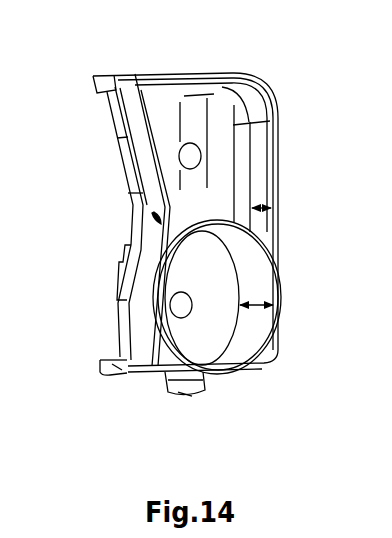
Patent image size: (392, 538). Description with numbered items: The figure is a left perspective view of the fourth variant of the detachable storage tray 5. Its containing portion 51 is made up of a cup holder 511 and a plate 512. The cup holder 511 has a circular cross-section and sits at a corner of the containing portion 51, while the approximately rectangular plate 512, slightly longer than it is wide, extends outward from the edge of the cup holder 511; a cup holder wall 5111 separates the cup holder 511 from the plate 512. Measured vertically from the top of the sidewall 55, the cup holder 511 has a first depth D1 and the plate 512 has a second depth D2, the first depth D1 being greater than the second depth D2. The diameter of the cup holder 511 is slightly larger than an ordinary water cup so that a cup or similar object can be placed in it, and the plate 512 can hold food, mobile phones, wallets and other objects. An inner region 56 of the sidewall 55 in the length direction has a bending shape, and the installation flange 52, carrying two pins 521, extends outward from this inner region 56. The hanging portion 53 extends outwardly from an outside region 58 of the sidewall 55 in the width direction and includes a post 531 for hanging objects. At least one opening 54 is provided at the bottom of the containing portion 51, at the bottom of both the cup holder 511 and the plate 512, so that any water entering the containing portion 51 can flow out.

The detachable storage tray 5 is at (281, 87).
The containing portion 51 is at (262, 160).
The cup holder 511 is at (222, 325).
The cup holder wall 5111 is at (250, 243).
The plate 512 is at (190, 100).
The installation flange 52 is at (152, 192).
The pins 521 is at (135, 268).
The hanging portion 53 is at (160, 380).
The post 531 is at (188, 398).
The opening 54 is at (188, 158).
The sidewall 55 is at (243, 74).
The inner region 56 is at (107, 360).
The outside region 58 is at (127, 373).
The first depth D1 is at (275, 292).
The second depth D2 is at (275, 205).